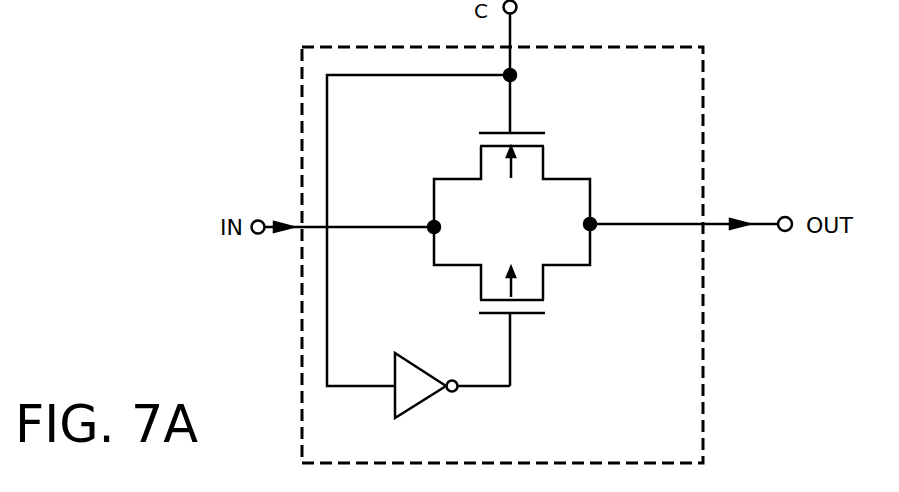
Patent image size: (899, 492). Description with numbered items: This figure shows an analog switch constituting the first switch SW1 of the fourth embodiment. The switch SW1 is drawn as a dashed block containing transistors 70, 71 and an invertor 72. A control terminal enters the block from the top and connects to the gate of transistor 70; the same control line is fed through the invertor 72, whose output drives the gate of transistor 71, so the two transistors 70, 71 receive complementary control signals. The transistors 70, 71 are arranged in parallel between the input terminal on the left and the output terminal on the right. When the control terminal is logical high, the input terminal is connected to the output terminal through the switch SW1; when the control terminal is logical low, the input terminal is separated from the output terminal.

The transistor 70 is at (528, 131).
The transistor 71 is at (524, 316).
The invertor 72 is at (418, 402).
The first switch SW1 is at (630, 47).